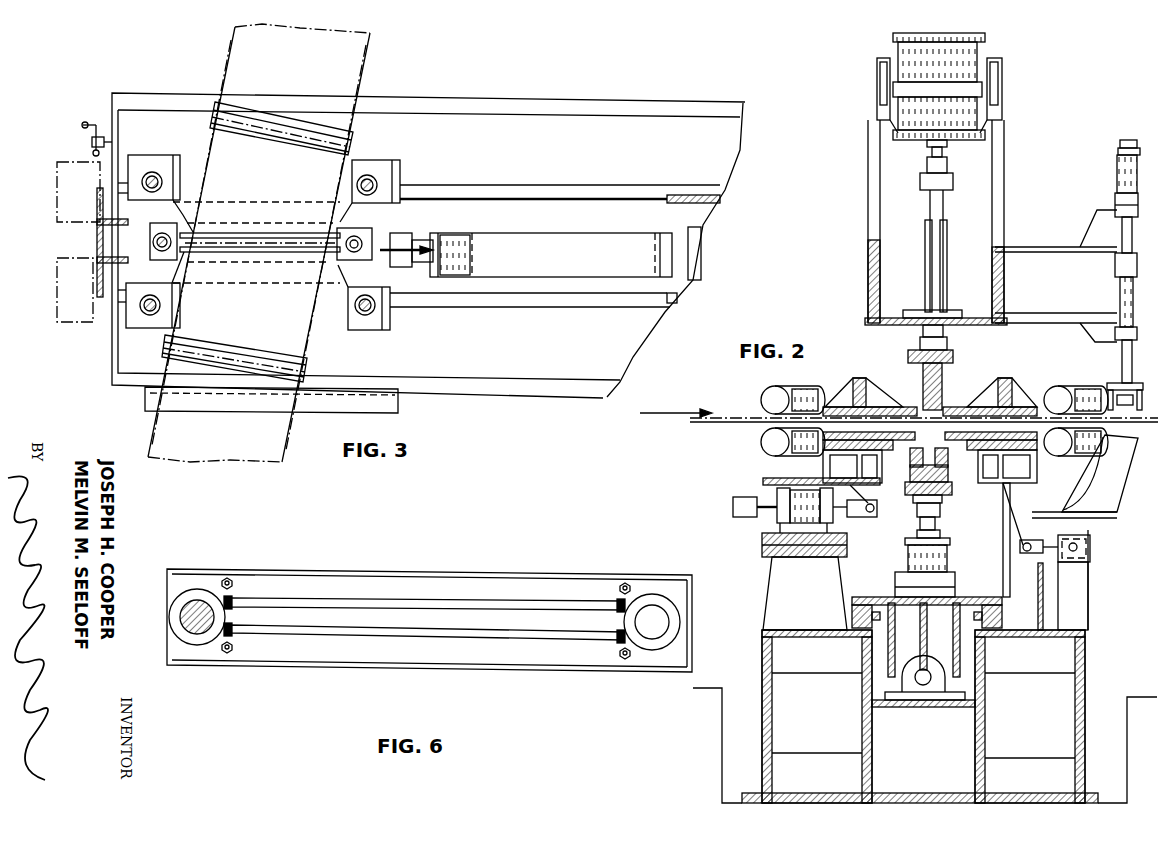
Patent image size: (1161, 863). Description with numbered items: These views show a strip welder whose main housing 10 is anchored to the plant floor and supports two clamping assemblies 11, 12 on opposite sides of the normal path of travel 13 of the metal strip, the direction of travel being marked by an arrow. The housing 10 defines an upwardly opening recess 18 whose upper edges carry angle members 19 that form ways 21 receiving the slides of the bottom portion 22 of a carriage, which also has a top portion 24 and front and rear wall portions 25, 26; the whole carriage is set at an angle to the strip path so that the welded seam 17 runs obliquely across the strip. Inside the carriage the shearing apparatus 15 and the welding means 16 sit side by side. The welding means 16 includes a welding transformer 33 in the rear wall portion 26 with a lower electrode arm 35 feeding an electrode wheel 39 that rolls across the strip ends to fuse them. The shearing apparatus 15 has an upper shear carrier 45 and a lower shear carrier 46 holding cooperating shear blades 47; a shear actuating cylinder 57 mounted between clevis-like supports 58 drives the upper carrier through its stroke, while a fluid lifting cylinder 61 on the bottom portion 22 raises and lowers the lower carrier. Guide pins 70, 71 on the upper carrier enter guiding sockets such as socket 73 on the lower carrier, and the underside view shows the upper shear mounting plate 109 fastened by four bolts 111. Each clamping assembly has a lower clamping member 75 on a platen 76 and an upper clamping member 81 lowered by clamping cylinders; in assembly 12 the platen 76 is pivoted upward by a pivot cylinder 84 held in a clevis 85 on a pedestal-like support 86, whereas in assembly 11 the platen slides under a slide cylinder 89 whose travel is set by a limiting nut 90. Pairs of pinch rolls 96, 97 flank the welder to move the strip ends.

In FIG. 2, the main housing 10 is at (1100, 684).
In FIG. 3, the clamping assembly 11 is at (186, 168).
In FIG. 2, the clamping assembly 11 is at (837, 355).
In FIG. 3, the clamping assembly 12 is at (330, 320).
In FIG. 2, the clamping assembly 12 is at (1036, 386).
In FIG. 3, the normal path of travel 13 is at (344, 68).
In FIG. 2, the normal path of travel 13 is at (733, 418).
In FIG. 3, the shearing apparatus 15 is at (398, 213).
In FIG. 2, the shearing apparatus 15 is at (949, 390).
In FIG. 3, the welding means 16 is at (551, 242).
In FIG. 3, the welded seam 17 is at (222, 212).
In FIG. 2, the upwardly opening recess 18 is at (882, 672).
In FIG. 2, the angle members 19 is at (862, 602).
In FIG. 2, the ways 21 is at (962, 606).
In FIG. 2, the bottom portion 22 is at (954, 588).
In FIG. 2, the top portion 24 is at (872, 270).
In FIG. 3, the front wall portion 25 is at (97, 242).
In FIG. 3, the rear wall portion 26 is at (722, 200).
In FIG. 3, the welding transformer 33 is at (702, 242).
In FIG. 3, the lower electrode arm 35 is at (515, 243).
In FIG. 3, the electrode wheel 39 is at (412, 262).
In FIG. 6, the upper shear carrier 45 is at (418, 617).
In FIG. 2, the upper shear carrier 45 is at (923, 387).
In FIG. 2, the lower shear carrier 46 is at (952, 485).
In FIG. 3, the shear blades 47 is at (260, 242).
In FIG. 6, the shear blades 47 is at (507, 607).
In FIG. 2, the shear blades 47 is at (918, 450).
In FIG. 2, the shear actuating cylinder 57 is at (893, 50).
In FIG. 2, the clevis-like supports 58 is at (870, 147).
In FIG. 2, the fluid lifting cylinder 61 is at (906, 558).
In FIG. 3, the front guide pin 70 is at (150, 247).
In FIG. 6, the front guide pin 70 is at (195, 610).
In FIG. 6, the rear guide pin 71 is at (650, 620).
In FIG. 3, the guiding socket 73 is at (364, 244).
In FIG. 3, the lower clamping member 75 is at (178, 303).
In FIG. 2, the lower clamping member 75 is at (843, 437).
In FIG. 2, the platen 76 is at (823, 468).
In FIG. 3, the upper clamping member 81 is at (153, 172).
In FIG. 2, the upper clamping member 81 is at (1010, 396).
In FIG. 2, the pivot cylinder 84 is at (1090, 533).
In FIG. 2, the clevis 85 is at (1090, 560).
In FIG. 2, the pedestal-like support 86 is at (1010, 503).
In FIG. 2, the slide cylinder 89 is at (778, 528).
In FIG. 2, the limiting nut 90 is at (733, 505).
In FIG. 2, the pinch rolls 96 is at (762, 443).
In FIG. 2, the pinch rolls 97 is at (1112, 506).
In FIG. 6, the upper shear mounting plate 109 is at (347, 582).
In FIG. 6, the bolts 111 is at (620, 586).